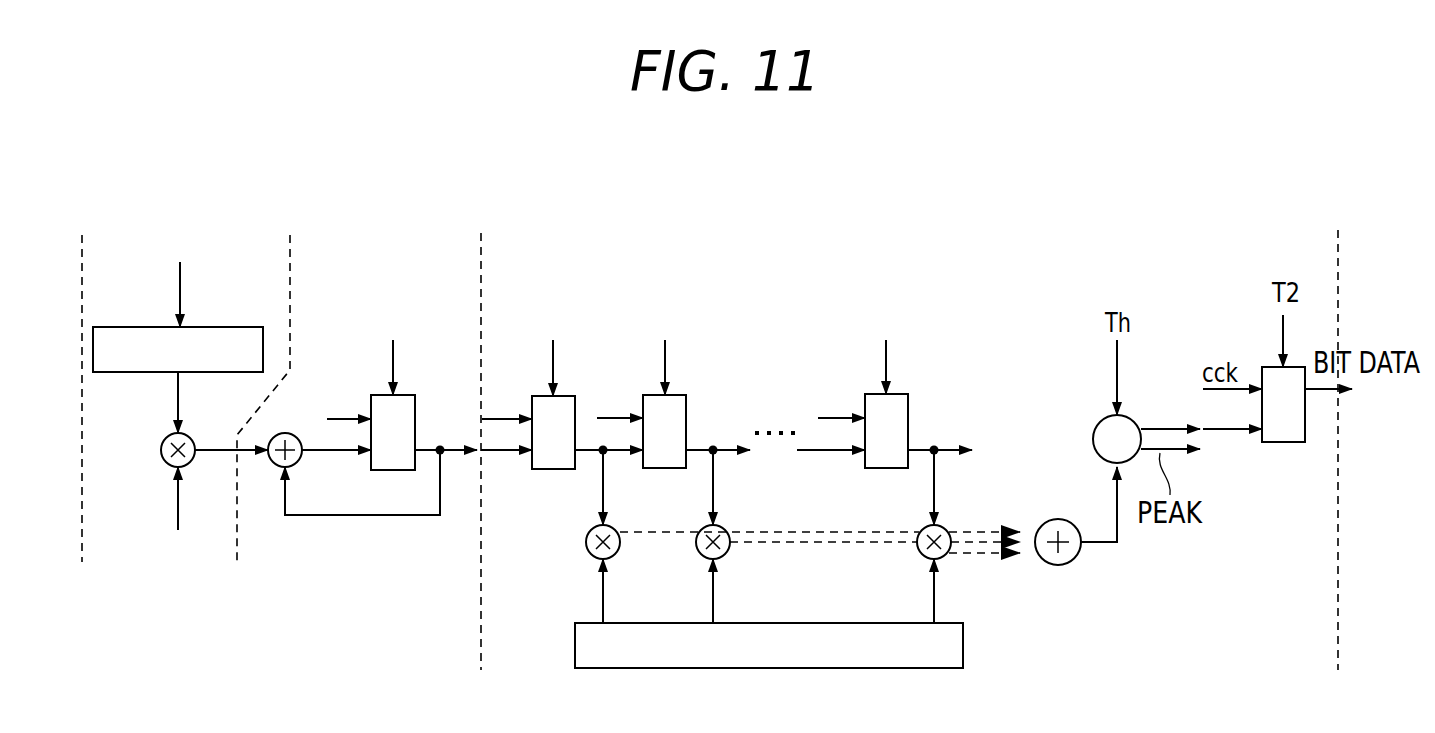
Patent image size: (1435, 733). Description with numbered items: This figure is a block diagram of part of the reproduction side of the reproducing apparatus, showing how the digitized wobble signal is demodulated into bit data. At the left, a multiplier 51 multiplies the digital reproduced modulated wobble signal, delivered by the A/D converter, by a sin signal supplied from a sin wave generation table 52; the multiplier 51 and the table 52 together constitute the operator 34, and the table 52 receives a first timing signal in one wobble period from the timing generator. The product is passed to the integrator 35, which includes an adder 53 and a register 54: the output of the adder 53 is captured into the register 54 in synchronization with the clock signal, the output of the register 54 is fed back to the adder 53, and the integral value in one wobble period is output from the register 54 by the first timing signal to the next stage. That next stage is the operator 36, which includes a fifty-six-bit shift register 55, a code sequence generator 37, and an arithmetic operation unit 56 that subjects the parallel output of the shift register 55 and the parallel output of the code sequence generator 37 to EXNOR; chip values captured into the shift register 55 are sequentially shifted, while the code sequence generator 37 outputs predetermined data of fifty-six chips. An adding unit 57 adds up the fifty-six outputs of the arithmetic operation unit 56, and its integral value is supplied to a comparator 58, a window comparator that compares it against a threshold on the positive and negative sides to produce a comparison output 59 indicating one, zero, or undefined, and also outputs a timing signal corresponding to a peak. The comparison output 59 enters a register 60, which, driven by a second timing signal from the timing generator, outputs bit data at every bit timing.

The operator 34 is at (194, 215).
The integrator 35 is at (405, 260).
The operator 36 is at (900, 291).
The code sequence generator 37 is at (963, 645).
The multiplier 51 is at (162, 446).
The sin wave generation table 52 is at (147, 325).
The adder 53 is at (273, 467).
The register 54 is at (410, 393).
The shift register 55 is at (752, 262).
The arithmetic operation unit 56 is at (584, 537).
The adding unit 57 is at (1045, 518).
The comparator 58 is at (1094, 428).
The comparison output 59 is at (1163, 425).
The register 60 is at (1262, 365).